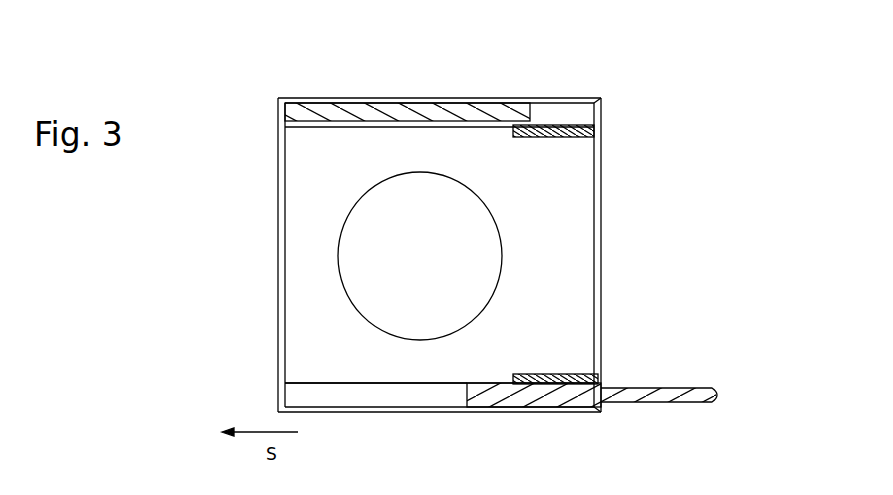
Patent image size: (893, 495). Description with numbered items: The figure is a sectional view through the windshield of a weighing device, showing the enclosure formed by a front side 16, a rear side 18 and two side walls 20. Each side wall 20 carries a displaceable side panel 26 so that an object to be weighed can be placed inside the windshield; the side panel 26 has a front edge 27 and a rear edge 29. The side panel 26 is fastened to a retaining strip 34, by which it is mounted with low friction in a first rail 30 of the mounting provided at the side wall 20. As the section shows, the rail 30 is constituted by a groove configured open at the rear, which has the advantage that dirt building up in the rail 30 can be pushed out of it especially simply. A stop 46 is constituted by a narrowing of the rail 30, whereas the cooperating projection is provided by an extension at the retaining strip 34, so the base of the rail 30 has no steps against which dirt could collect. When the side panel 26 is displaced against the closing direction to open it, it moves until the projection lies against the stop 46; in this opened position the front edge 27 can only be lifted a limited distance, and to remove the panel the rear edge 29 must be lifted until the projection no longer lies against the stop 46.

The front side 16 is at (276, 283).
The rear side 18 is at (601, 243).
The side walls 20 is at (568, 126).
The side panel 26 is at (497, 252).
The retaining strip 34 is at (458, 112).
The front edge 27 is at (465, 398).
The rear edge 29 is at (722, 393).
The first rail 30 is at (513, 100).
The stop 46 is at (601, 100).